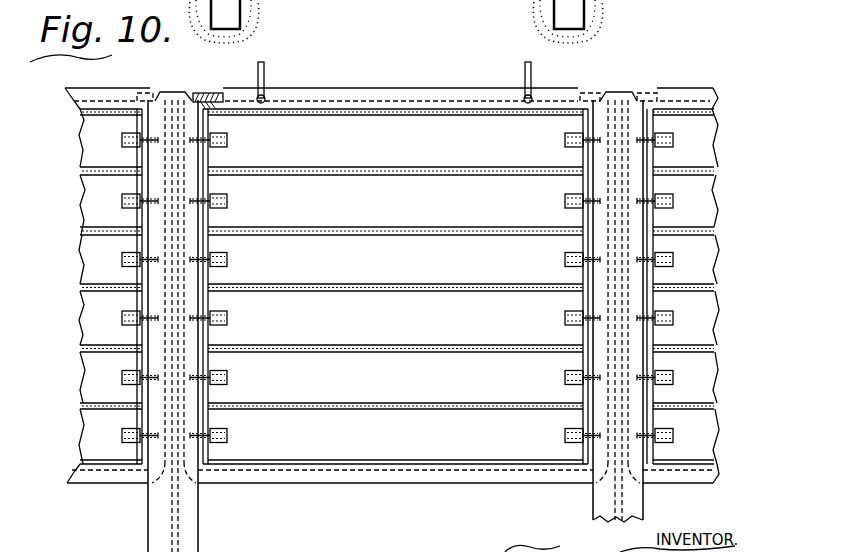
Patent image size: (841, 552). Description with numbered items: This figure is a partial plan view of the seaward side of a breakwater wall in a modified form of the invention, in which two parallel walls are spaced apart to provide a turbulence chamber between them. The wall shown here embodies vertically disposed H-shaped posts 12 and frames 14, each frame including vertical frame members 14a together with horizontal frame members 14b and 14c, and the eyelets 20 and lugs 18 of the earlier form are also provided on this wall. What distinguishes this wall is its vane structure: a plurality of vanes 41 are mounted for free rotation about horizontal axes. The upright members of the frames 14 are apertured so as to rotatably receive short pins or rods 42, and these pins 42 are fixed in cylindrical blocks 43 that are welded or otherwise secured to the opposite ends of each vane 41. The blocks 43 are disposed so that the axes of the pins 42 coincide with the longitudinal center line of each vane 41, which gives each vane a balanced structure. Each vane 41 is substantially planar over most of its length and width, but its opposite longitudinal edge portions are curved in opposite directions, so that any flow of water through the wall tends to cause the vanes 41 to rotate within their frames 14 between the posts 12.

The H-shaped post 12 is at (192, 548).
The frame 14 is at (374, 89).
The vertical frame member 14a is at (212, 165).
The horizontal frame member 14b is at (101, 96).
The horizontal frame member 14c is at (101, 478).
The lug 18 is at (172, 92).
The eyelet 20 is at (265, 66).
The vane 41 is at (411, 210).
The pin 42 is at (204, 208).
The cylindrical block 43 is at (224, 193).